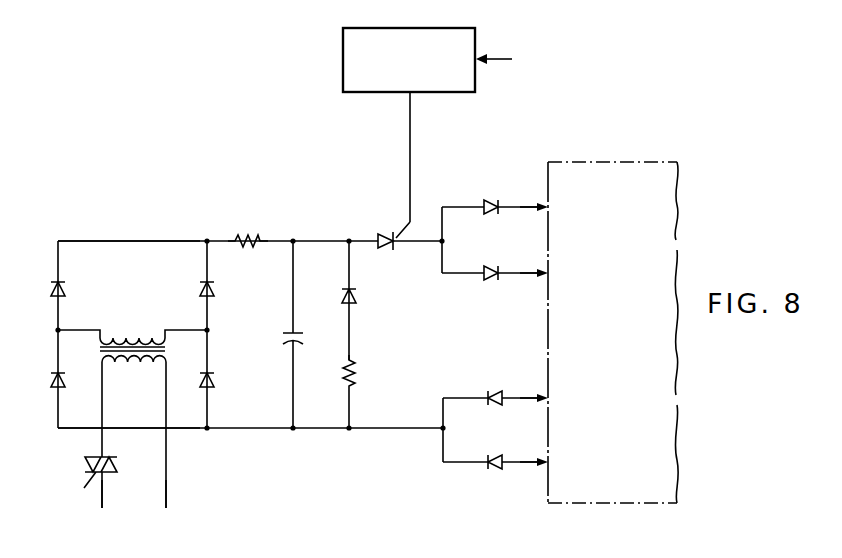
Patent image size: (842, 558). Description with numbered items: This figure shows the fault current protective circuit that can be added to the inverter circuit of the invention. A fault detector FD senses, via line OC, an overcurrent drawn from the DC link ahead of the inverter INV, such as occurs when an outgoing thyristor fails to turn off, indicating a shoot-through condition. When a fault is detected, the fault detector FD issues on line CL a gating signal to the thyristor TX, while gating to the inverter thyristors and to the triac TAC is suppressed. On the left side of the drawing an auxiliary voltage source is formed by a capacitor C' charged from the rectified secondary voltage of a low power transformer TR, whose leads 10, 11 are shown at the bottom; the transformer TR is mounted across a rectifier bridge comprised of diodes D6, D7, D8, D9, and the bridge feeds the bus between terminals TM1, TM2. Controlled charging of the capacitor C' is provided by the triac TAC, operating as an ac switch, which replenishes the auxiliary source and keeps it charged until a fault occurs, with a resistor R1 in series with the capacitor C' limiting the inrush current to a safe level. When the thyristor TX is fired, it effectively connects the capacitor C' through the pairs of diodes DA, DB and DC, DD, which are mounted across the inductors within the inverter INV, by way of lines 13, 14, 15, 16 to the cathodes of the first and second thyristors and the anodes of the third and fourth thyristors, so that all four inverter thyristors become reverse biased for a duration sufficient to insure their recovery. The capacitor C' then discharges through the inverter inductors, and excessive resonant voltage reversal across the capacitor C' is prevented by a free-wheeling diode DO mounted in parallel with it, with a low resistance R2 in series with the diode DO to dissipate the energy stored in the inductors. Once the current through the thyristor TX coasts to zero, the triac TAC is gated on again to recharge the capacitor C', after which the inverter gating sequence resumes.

The fault detector FD is at (382, 28).
The line OC is at (513, 62).
The line CL is at (408, 143).
The inverter INV is at (612, 160).
The terminal TM1 is at (191, 240).
The terminal TM2 is at (174, 432).
The resistor R1 is at (250, 236).
The low resistance R2 is at (358, 373).
The capacitor C' is at (275, 334).
The thyristor TX is at (392, 231).
The diode D6 is at (70, 291).
The diode D7 is at (197, 292).
The diode D8 is at (50, 382).
The diode D9 is at (214, 383).
The free-wheeling diode DO is at (358, 296).
The diode DA is at (494, 200).
The diode DB is at (494, 266).
The diode DC is at (494, 392).
The diode DD is at (494, 456).
The transformer TR is at (100, 351).
The triac TAC is at (82, 466).
The transformer secondary lead 10 is at (104, 489).
The transformer secondary lead 11 is at (165, 494).
The line 13 is at (524, 204).
The line 14 is at (524, 270).
The line 15 is at (521, 394).
The line 16 is at (521, 458).